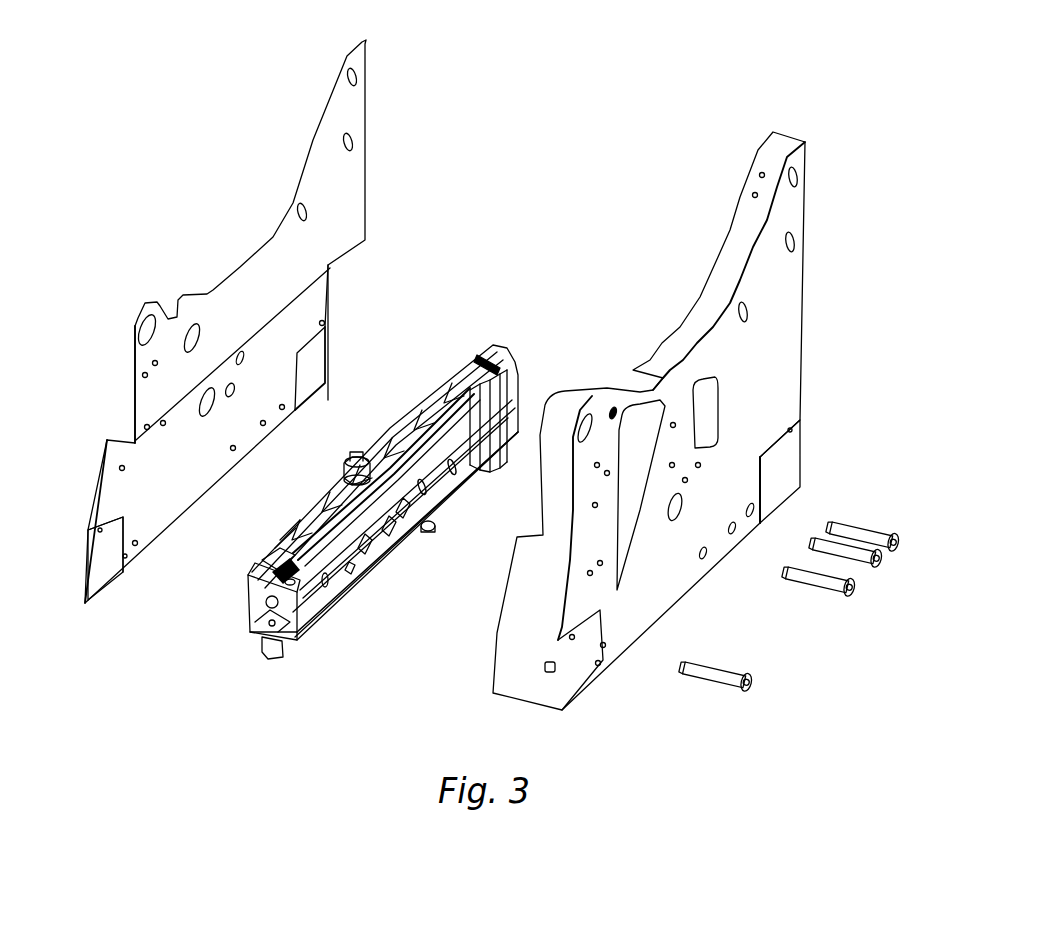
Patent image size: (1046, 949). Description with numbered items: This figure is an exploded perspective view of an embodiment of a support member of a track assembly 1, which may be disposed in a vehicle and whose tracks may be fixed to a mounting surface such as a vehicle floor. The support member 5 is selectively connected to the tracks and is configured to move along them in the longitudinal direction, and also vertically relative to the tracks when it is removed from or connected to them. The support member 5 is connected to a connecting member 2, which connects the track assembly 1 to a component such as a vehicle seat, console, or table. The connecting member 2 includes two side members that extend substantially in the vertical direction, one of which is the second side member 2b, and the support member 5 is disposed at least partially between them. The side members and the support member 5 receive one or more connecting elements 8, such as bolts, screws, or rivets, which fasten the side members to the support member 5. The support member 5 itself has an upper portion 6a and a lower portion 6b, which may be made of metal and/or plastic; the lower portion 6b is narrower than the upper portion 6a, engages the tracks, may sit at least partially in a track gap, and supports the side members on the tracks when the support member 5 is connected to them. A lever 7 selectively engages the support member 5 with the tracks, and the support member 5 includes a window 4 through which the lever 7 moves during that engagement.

The track assembly 1 is at (680, 78).
The connecting member 2 is at (176, 203).
The second side member 2b is at (92, 488).
The window 4 is at (420, 540).
The support member 5 is at (268, 660).
The upper portion 6a is at (248, 605).
The lower portion 6b is at (305, 640).
The lever 7 is at (438, 530).
The connecting elements 8 is at (899, 551).